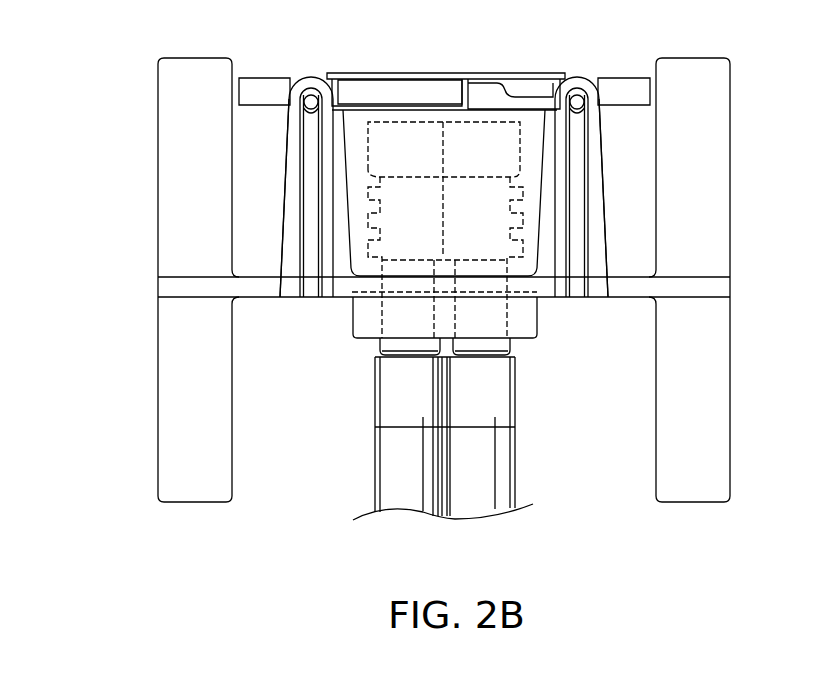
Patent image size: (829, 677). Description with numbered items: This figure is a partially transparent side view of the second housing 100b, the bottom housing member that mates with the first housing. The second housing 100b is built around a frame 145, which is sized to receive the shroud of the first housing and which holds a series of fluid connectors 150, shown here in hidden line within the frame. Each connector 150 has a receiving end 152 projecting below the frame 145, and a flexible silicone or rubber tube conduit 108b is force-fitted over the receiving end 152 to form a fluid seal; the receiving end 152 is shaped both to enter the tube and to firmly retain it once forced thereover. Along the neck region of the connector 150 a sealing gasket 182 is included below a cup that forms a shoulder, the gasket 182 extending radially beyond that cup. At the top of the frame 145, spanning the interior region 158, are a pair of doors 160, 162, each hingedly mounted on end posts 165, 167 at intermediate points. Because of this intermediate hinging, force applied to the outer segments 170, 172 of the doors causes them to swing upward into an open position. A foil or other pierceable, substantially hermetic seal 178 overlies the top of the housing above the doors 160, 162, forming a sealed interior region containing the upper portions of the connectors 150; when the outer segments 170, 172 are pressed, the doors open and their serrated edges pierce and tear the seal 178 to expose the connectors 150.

The second housing 100b is at (130, 274).
The tube conduit 108b is at (519, 468).
The frame 145 is at (628, 283).
The fluid connectors 150 is at (362, 145).
The receiving end 152 is at (377, 356).
The interior region 158 is at (535, 150).
The door 160 is at (295, 67).
The door 162 is at (593, 67).
The end post 165 is at (297, 208).
The end post 167 is at (598, 198).
The outer segment 170 is at (253, 82).
The outer segment 172 is at (617, 82).
The seal 178 is at (424, 73).
The sealing gasket 182 is at (365, 194).